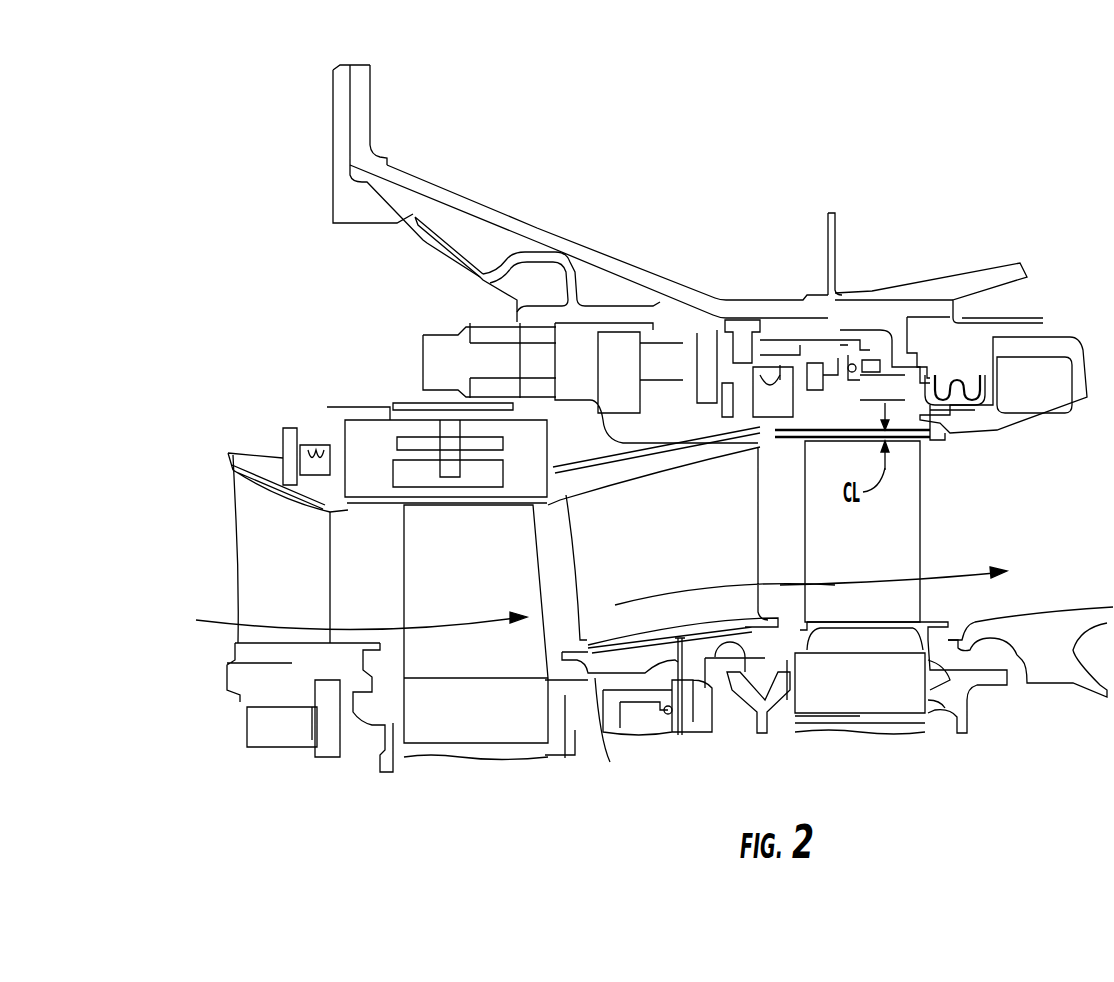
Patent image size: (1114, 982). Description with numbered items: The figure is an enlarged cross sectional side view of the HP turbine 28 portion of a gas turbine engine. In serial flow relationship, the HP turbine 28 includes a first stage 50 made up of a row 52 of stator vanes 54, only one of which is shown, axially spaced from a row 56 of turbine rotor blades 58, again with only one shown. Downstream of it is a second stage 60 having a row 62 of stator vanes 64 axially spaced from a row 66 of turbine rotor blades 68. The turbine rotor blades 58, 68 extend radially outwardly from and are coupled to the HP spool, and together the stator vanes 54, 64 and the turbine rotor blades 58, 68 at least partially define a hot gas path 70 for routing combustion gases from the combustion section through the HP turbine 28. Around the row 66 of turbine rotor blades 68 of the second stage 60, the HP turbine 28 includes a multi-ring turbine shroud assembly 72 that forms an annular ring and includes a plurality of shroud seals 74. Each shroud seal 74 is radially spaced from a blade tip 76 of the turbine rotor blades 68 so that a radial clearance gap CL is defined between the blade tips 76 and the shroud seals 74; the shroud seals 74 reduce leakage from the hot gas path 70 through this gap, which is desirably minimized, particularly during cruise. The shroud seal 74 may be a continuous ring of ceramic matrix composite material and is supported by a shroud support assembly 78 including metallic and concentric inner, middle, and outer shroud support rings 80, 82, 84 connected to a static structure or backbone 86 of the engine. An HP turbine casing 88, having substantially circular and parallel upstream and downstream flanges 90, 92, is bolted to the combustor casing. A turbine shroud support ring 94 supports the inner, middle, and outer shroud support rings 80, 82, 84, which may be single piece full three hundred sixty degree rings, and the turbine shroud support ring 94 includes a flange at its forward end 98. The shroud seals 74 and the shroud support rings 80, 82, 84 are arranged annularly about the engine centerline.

The HP turbine 28 is at (755, 135).
The first stage 50 is at (362, 805).
The row of stator vanes 52 is at (233, 548).
The stator vane 54 is at (306, 549).
The row of turbine rotor blades 56 is at (404, 577).
The turbine rotor blade 58 is at (476, 632).
The second stage 60 is at (697, 780).
The row of stator vanes 62 is at (580, 555).
The stator vane 64 is at (691, 550).
The row of turbine rotor blades 66 is at (924, 540).
The turbine rotor blade 68 is at (867, 587).
The hot gas path 70 is at (225, 620).
The multi-ring turbine shroud assembly 72 is at (873, 355).
The shroud seal 74 is at (925, 435).
The blade tip 76 is at (850, 448).
The shroud support assembly 78 is at (818, 295).
The inner shroud support ring 80 is at (926, 366).
The middle shroud support ring 82 is at (770, 335).
The outer shroud support ring 84 is at (805, 322).
The static structure or backbone 86 is at (515, 192).
The HP turbine casing 88 is at (622, 262).
The upstream flange 90 is at (361, 100).
The downstream flange 92 is at (838, 231).
The turbine shroud support ring 94 is at (455, 262).
The forward end 98 is at (340, 108).